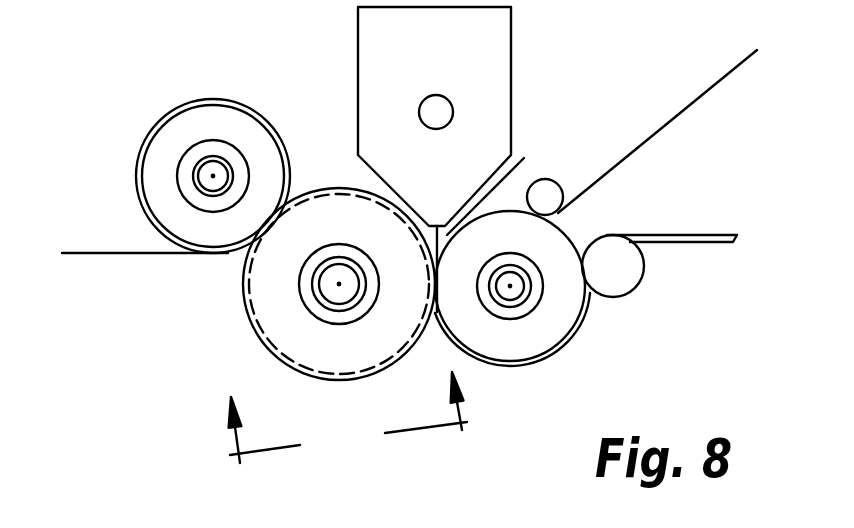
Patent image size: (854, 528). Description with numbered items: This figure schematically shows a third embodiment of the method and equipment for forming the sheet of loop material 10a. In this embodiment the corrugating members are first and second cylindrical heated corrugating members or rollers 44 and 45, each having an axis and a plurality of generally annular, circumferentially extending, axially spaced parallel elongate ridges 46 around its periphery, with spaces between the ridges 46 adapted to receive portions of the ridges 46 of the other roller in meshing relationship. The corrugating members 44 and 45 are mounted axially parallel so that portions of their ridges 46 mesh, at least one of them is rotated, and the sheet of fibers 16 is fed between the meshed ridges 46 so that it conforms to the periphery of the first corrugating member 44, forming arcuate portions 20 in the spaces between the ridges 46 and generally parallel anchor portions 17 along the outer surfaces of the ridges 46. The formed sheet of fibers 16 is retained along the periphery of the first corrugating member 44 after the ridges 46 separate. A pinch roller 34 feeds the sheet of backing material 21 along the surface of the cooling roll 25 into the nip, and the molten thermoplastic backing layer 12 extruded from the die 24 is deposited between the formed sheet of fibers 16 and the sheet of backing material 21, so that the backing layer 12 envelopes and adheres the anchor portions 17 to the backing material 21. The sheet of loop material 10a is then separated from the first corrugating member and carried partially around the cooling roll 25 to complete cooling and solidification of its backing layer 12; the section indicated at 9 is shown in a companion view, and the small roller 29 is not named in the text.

The section line 9- 9 is at (350, 449).
The sheet of loop material 10a is at (656, 222).
The molten thermoplastic backing layer 12 is at (497, 178).
The sheet of fibers 16 is at (105, 252).
The anchor portions 17 is at (321, 188).
The arcuate portions 20 is at (510, 360).
The sheet of backing material 21 is at (720, 78).
The die 24 is at (503, 55).
The cooling roll 25 is at (557, 327).
The nip roller 29 is at (631, 282).
The pinch roller 34 is at (546, 190).
The first cylindrical heated corrugating member 44 is at (360, 367).
The second cylindrical heated corrugating member 45 is at (198, 118).
The ridges 46 is at (250, 105).